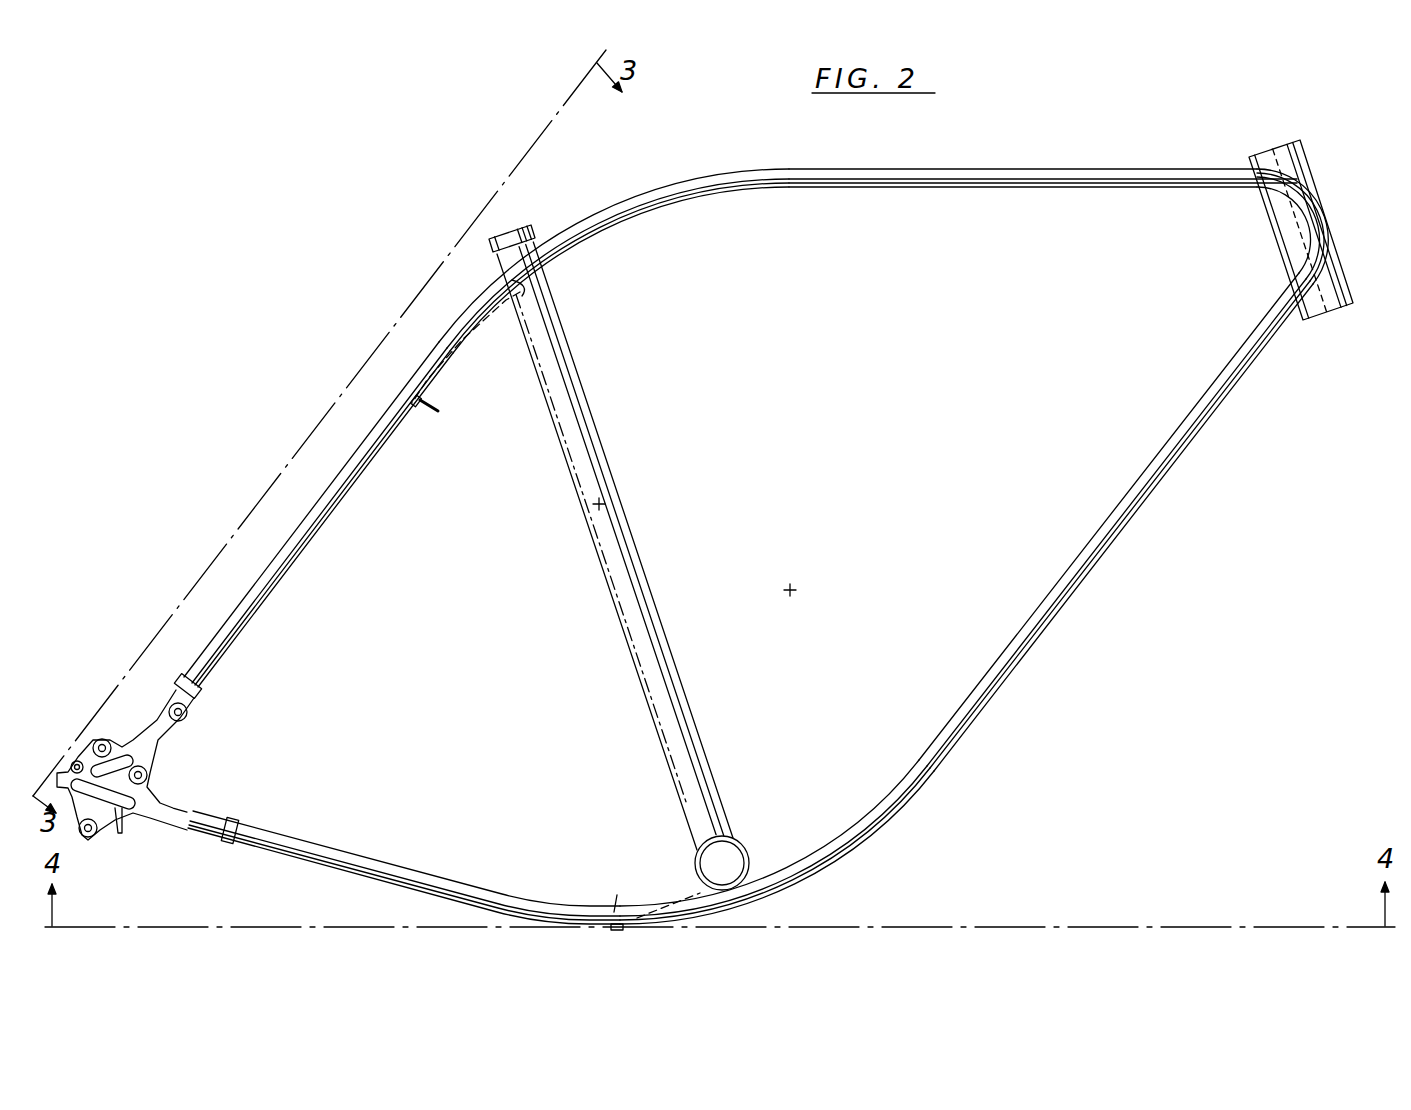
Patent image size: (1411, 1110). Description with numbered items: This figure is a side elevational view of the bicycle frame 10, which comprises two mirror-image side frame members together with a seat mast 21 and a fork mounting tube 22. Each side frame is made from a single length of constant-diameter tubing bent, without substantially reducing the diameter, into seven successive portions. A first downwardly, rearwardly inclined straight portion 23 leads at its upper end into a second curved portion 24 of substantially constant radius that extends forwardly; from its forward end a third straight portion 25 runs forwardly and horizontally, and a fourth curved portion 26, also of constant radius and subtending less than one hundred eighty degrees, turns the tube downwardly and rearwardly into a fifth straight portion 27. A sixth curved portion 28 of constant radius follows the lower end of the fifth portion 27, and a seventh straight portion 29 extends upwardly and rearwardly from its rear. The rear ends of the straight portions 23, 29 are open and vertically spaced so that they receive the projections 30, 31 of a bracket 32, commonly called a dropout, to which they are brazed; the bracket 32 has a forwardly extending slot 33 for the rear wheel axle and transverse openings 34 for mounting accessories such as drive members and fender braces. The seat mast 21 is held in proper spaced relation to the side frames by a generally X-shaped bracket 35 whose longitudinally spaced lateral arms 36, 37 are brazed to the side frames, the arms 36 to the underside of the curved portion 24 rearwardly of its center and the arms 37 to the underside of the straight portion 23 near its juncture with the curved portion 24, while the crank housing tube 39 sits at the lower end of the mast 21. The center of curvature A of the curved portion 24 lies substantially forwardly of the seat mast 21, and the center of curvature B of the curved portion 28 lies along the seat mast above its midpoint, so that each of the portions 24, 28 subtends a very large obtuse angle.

The frame 10 is at (948, 166).
The seat mast 21 is at (641, 590).
The fork mounting tube 22 is at (1277, 152).
The first downwardly, rearwardly inclined straight portion 23 is at (307, 537).
The second curved portion 24 is at (583, 233).
The third straight portion 25 is at (1012, 180).
The fourth curved portion 26 is at (1302, 195).
The fifth straight portion 27 is at (1212, 382).
The sixth curved portion 28 is at (812, 868).
The seventh straight portion 29 is at (457, 895).
The projection 30 is at (143, 737).
The projection 31 is at (186, 816).
The bracket 32 is at (150, 782).
The forwardly extending slot 33 is at (116, 808).
The transverse openings 34 is at (88, 840).
The bracket 35 is at (448, 362).
The lateral arms 36 is at (521, 297).
The lateral arms 37 is at (421, 407).
The crank housing tube 39 is at (745, 848).
The center of curvature A is at (797, 585).
The center of curvature B is at (597, 506).